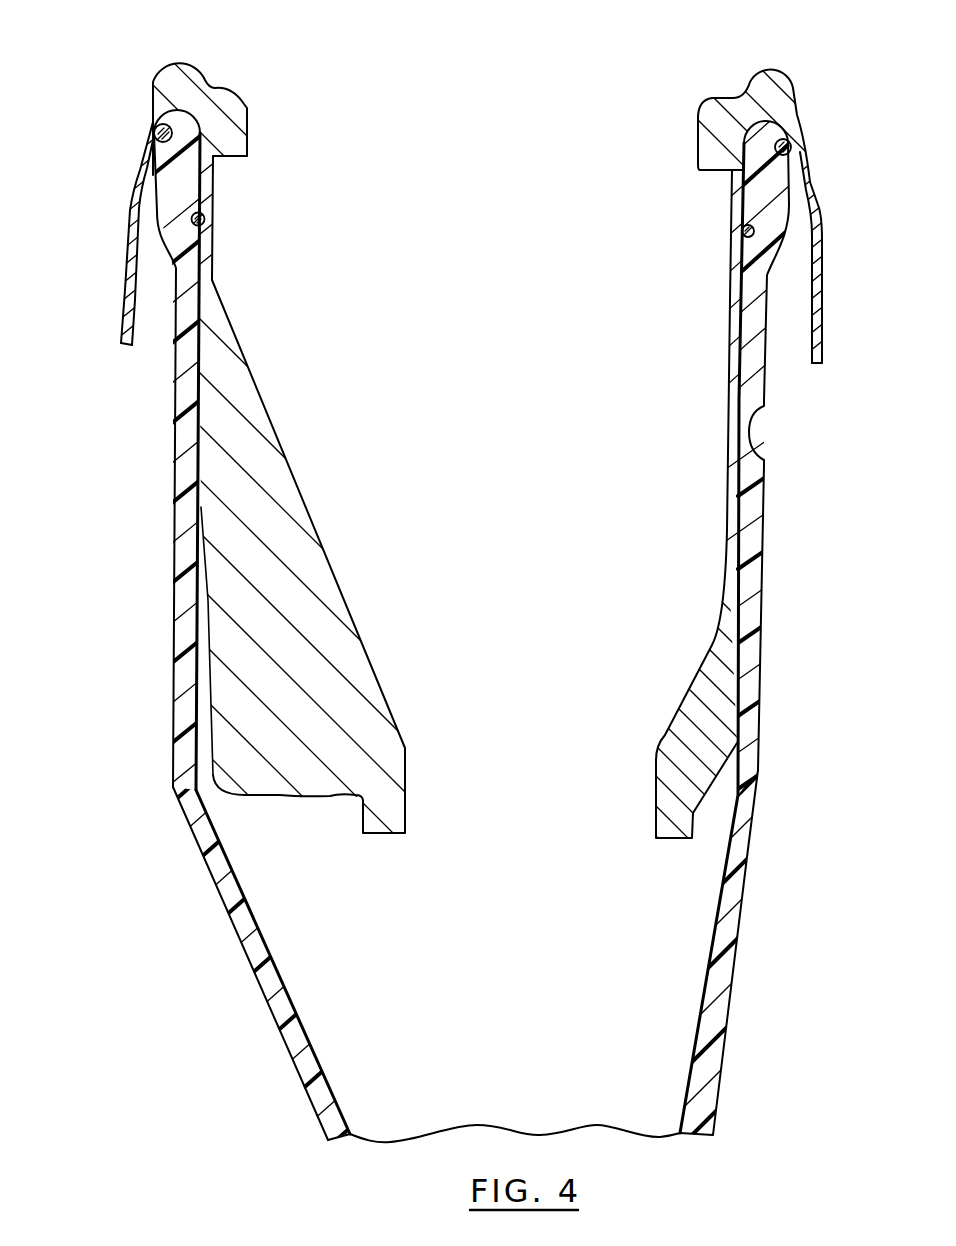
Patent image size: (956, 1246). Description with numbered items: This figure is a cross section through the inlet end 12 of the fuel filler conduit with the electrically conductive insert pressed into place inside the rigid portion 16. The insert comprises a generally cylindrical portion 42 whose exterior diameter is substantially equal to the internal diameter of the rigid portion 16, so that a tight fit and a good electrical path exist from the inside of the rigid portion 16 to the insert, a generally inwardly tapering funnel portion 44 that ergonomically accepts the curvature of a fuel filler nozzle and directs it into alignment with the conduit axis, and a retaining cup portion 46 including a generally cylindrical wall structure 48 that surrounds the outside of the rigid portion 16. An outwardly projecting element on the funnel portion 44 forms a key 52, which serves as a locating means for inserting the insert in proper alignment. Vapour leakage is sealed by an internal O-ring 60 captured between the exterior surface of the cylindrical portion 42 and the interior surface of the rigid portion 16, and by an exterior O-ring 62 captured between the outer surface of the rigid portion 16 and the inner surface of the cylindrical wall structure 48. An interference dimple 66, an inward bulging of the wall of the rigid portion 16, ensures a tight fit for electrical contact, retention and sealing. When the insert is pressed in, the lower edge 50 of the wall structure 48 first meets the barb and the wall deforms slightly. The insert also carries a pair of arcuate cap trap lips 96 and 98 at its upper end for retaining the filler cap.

The inlet end 12 is at (135, 877).
The rigid portion 16 is at (320, 1120).
The generally cylindrical portion 42 is at (214, 258).
The funnel portion 44 is at (318, 553).
The retaining cup portion 46 is at (182, 60).
The cylindrical wall structure 48 is at (130, 262).
The lower edge 50 is at (120, 346).
The key 52 is at (220, 640).
The internal O-ring 60 is at (206, 220).
The exterior O-ring 62 is at (148, 126).
The interference dimple 66 is at (762, 432).
The cap trap lip 96 is at (249, 160).
The cap trap lip 98 is at (710, 169).